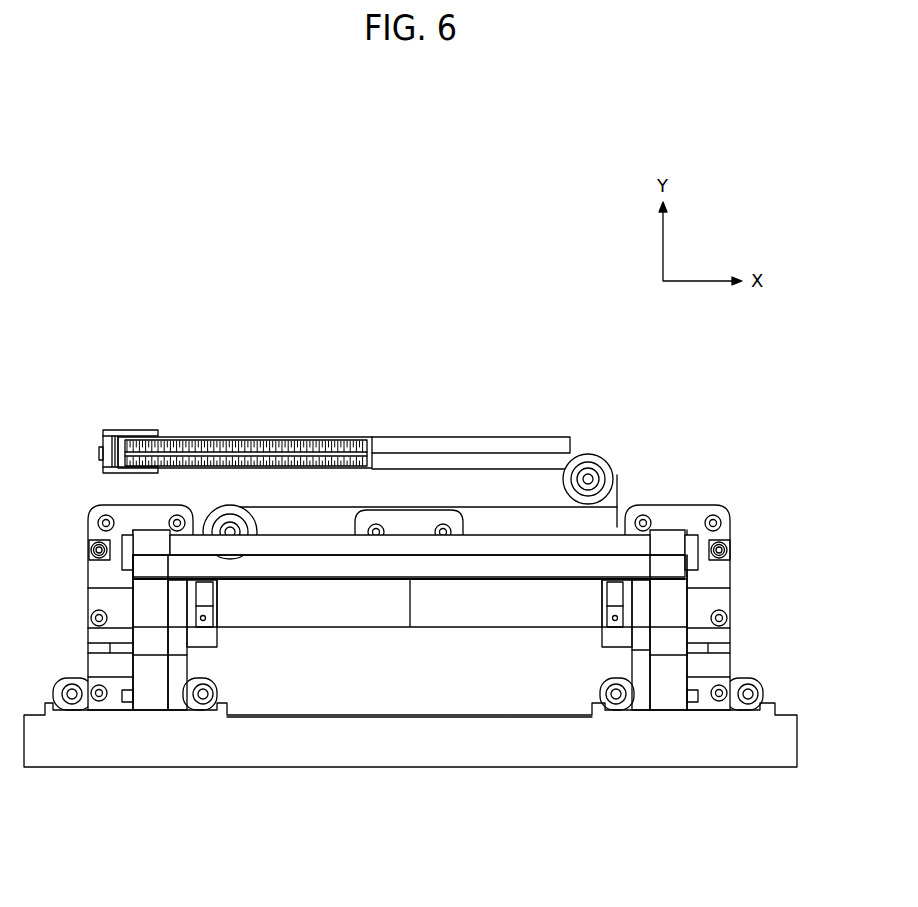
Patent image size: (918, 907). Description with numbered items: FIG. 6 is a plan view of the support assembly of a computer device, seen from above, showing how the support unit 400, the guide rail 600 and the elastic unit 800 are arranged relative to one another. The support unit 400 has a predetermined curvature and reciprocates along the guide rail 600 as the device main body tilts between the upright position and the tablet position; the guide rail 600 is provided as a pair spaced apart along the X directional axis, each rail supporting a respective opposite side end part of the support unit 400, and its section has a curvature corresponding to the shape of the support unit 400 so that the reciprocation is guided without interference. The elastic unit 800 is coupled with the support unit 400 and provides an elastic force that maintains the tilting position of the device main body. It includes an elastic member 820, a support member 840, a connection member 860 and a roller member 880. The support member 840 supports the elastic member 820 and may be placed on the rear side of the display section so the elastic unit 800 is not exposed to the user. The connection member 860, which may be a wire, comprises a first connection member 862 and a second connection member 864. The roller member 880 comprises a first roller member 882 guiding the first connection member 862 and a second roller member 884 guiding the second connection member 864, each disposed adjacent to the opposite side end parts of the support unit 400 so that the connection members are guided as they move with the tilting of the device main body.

The support unit 400 is at (519, 560).
The guide rail 600 is at (708, 632).
The elastic unit 800 is at (537, 330).
The elastic member 820 is at (194, 440).
The support member 840 is at (123, 437).
The connection member 860 is at (582, 366).
The first connection member 862 is at (620, 527).
The second connection member 864 is at (512, 507).
The roller member 880 is at (405, 366).
The first roller member 882 is at (572, 487).
The second roller member 884 is at (243, 512).